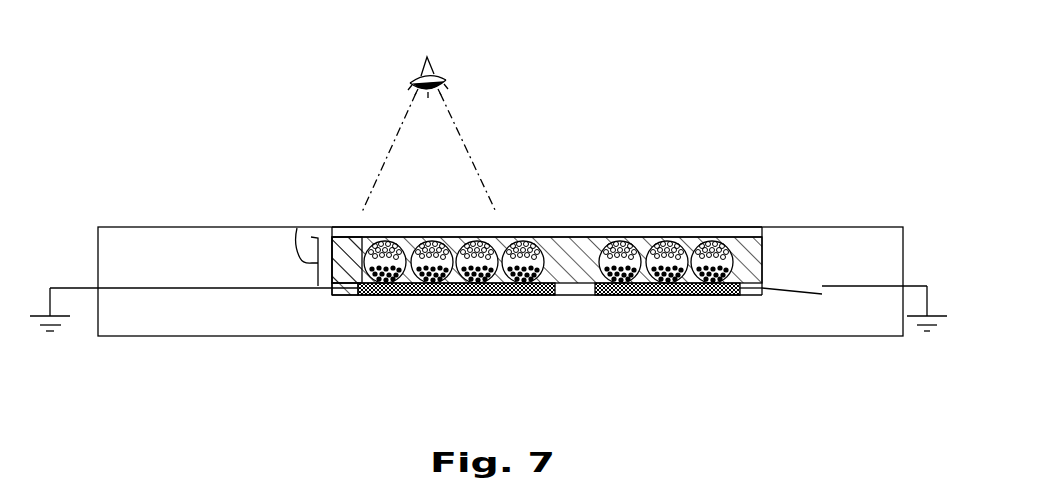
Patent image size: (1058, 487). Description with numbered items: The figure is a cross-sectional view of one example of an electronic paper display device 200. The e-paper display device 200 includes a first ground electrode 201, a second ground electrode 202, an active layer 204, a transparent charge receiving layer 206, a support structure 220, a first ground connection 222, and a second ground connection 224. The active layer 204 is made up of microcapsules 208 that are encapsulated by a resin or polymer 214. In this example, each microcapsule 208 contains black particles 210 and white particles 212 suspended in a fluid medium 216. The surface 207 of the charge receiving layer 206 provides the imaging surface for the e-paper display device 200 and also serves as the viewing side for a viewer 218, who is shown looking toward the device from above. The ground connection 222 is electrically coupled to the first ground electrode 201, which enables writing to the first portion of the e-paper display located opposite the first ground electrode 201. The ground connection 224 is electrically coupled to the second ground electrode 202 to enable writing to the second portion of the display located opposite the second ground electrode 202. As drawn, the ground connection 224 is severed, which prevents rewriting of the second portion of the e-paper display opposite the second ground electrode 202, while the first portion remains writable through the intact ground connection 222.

The e-paper display device 200 is at (590, 76).
The first ground electrode 201 is at (452, 295).
The second ground electrode 202 is at (645, 295).
The active layer 204 is at (298, 240).
The transparent charge receiving layer 206 is at (755, 230).
The surface 207 is at (570, 228).
The microcapsules 208 is at (447, 240).
The black particles 210 is at (345, 295).
The white particles 212 is at (385, 232).
The resin or polymer 214 is at (346, 238).
The fluid medium 216 is at (495, 245).
The viewer 218 is at (436, 70).
The support structure 220 is at (140, 238).
The first ground connection 222 is at (73, 285).
The second ground connection 224 is at (880, 283).